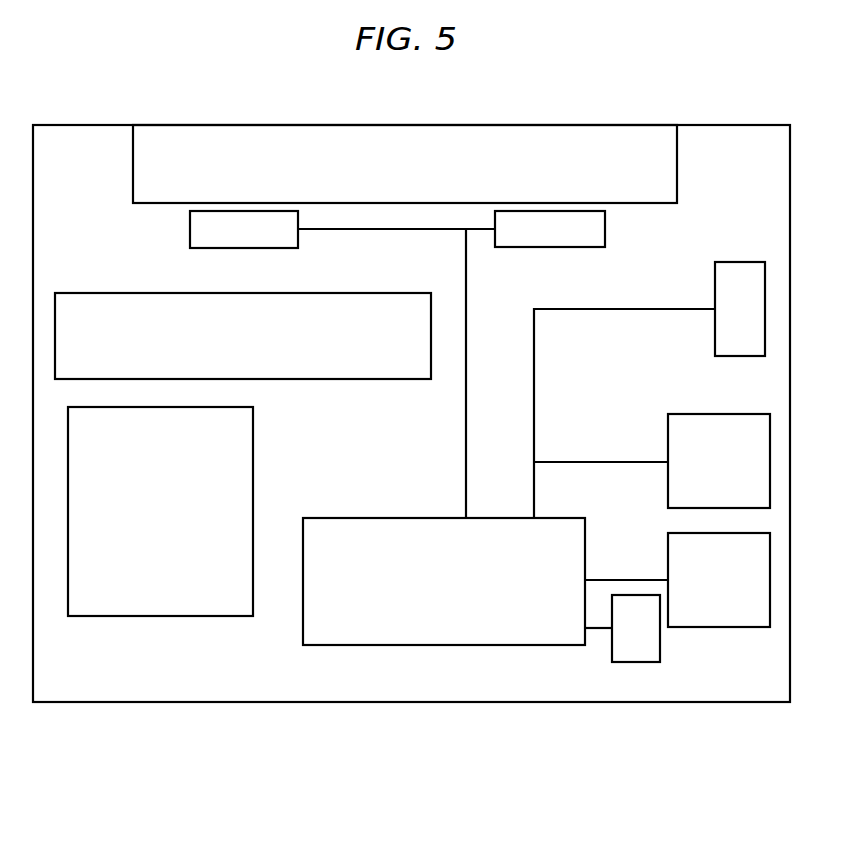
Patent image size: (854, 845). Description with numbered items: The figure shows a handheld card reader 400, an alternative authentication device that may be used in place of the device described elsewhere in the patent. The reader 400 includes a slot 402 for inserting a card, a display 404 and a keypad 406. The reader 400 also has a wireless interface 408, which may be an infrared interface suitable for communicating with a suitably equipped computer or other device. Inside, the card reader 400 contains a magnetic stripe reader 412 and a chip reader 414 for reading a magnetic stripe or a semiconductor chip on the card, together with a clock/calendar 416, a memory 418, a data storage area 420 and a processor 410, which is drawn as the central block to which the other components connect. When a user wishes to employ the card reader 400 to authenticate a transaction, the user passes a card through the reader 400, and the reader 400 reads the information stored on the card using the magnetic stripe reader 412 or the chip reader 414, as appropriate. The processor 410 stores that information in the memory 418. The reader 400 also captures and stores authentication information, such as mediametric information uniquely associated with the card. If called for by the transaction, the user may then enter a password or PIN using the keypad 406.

The handheld card reader 400 is at (157, 732).
The slot 402 is at (198, 125).
The display 404 is at (308, 379).
The keypad 406 is at (153, 616).
The wireless interface 408 is at (715, 330).
The processor 410 is at (444, 581).
The magnetic stripe reader 412 is at (190, 223).
The chip reader 414 is at (605, 222).
The clock/calendar 416 is at (660, 642).
The memory 418 is at (668, 553).
The data storage area 420 is at (668, 436).